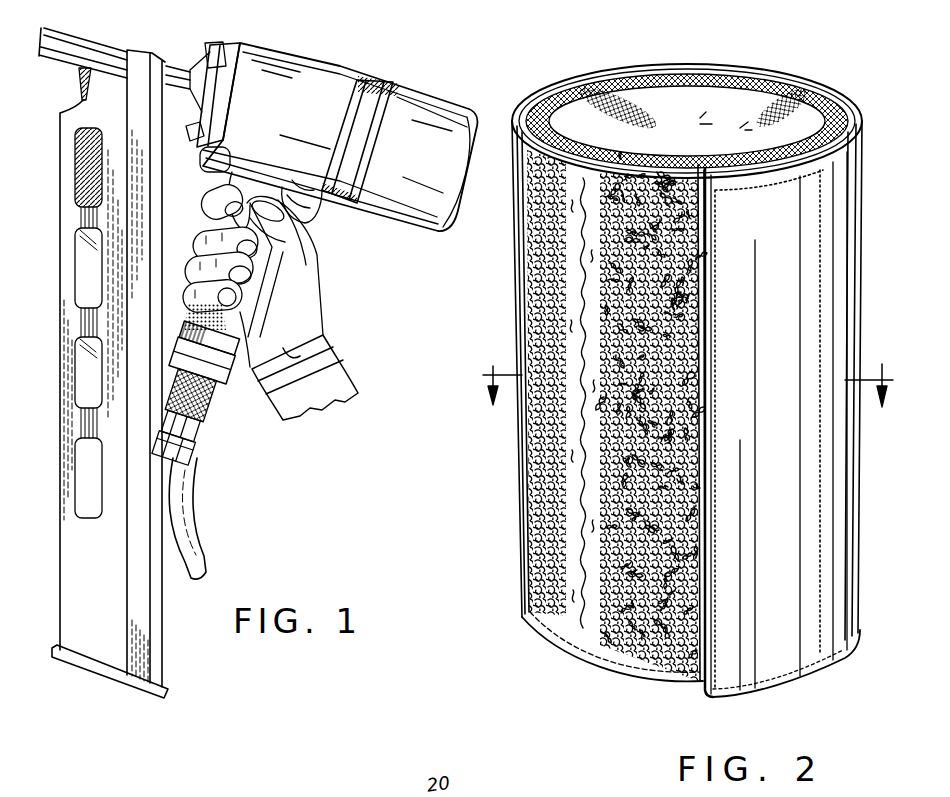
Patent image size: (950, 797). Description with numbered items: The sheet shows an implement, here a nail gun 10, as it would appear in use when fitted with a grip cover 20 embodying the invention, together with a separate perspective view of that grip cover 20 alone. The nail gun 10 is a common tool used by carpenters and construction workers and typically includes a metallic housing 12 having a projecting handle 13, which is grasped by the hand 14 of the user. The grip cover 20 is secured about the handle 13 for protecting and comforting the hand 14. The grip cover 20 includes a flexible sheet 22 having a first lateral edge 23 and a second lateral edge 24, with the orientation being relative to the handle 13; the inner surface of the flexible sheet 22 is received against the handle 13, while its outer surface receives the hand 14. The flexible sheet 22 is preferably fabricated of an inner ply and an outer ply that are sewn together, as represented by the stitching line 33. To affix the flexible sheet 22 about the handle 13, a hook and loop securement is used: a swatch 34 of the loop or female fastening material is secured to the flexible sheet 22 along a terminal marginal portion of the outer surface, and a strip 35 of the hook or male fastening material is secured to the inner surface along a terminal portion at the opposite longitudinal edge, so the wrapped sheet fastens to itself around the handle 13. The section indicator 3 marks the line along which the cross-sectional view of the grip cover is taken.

In FIG. 1, the nail gun 10 is at (337, 116).
In FIG. 1, the metallic housing 12 is at (396, 74).
In FIG. 1, the handle 13 is at (240, 382).
In FIG. 1, the hand 14 is at (338, 342).
In FIG. 1, the grip cover 20 is at (312, 230).
In FIG. 2, the grip cover 20 is at (651, 376).
In FIG. 2, the flexible sheet 22 is at (520, 468).
In FIG. 2, the first lateral edge 23 is at (762, 45).
In FIG. 2, the second lateral edge 24 is at (528, 630).
In FIG. 2, the stitching line 33 is at (787, 680).
In FIG. 2, the swatch 34 is at (617, 668).
In FIG. 2, the strip 35 is at (777, 170).
In FIG. 2, the section line 3- 3 is at (685, 374).